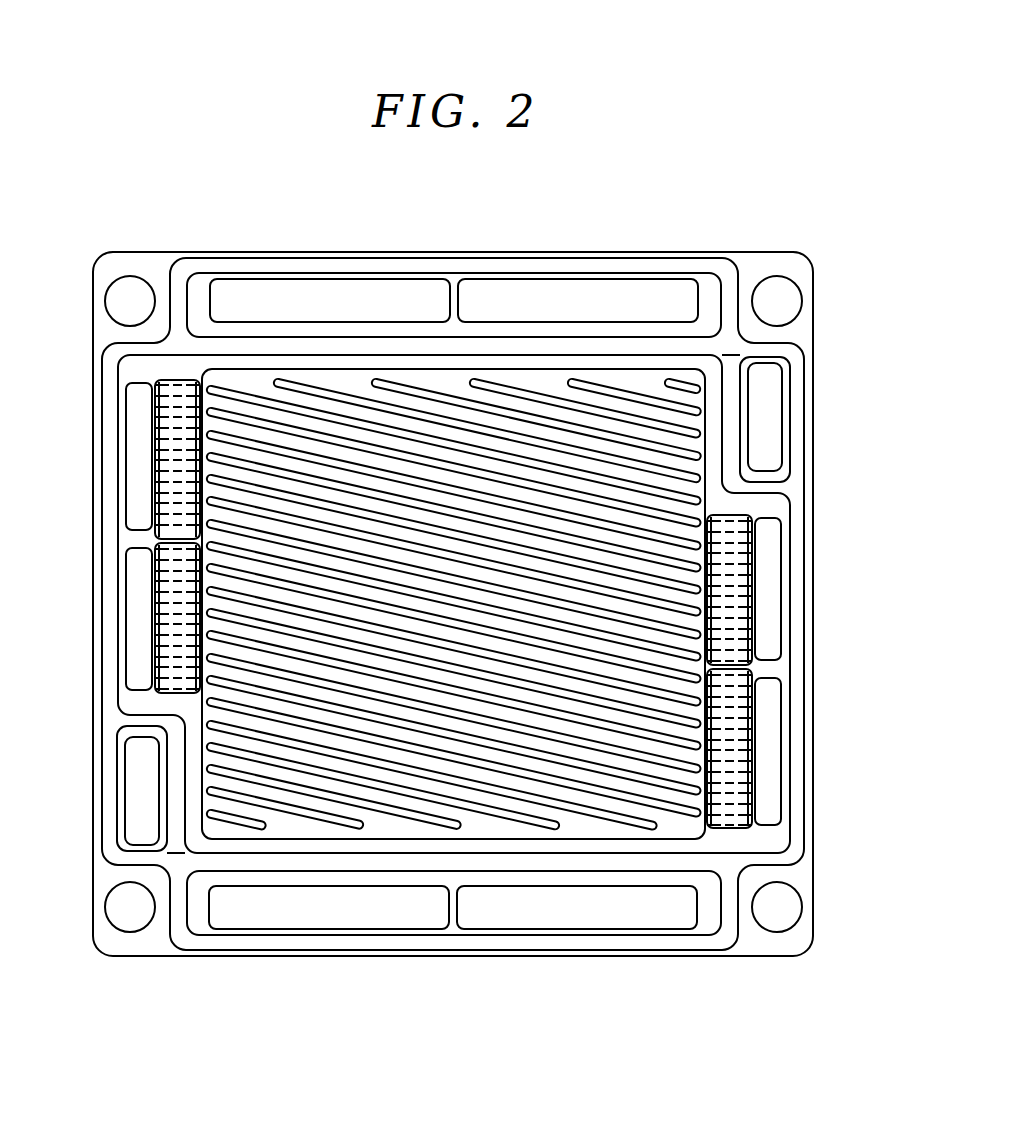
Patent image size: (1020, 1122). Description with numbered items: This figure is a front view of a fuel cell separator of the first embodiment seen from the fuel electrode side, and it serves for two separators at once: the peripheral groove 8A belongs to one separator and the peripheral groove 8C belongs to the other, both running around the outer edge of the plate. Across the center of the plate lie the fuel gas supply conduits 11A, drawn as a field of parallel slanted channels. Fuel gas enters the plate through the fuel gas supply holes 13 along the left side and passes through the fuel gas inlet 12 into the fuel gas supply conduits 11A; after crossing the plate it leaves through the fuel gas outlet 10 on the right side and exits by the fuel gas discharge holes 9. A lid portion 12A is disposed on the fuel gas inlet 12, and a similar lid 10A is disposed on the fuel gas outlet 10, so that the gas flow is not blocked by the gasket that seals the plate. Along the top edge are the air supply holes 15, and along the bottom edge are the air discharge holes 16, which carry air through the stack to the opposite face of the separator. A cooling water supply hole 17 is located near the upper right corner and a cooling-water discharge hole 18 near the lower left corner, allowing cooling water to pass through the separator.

The peripheral groove 8A is at (800, 832).
The peripheral groove 8C is at (507, 604).
The fuel gas discharge holes 9 is at (768, 614).
The fuel gas outlet 10 is at (740, 573).
The lid 10A is at (740, 749).
The fuel gas supply conduits 11A is at (518, 402).
The fuel gas inlet 12 is at (165, 460).
The lid portion 12A is at (164, 687).
The fuel gas supply holes 13 is at (138, 503).
The air supply holes 15 is at (359, 297).
The air discharge holes 16 is at (366, 912).
The cooling water supply hole 17 is at (768, 426).
The cooling-water discharge hole 18 is at (140, 798).